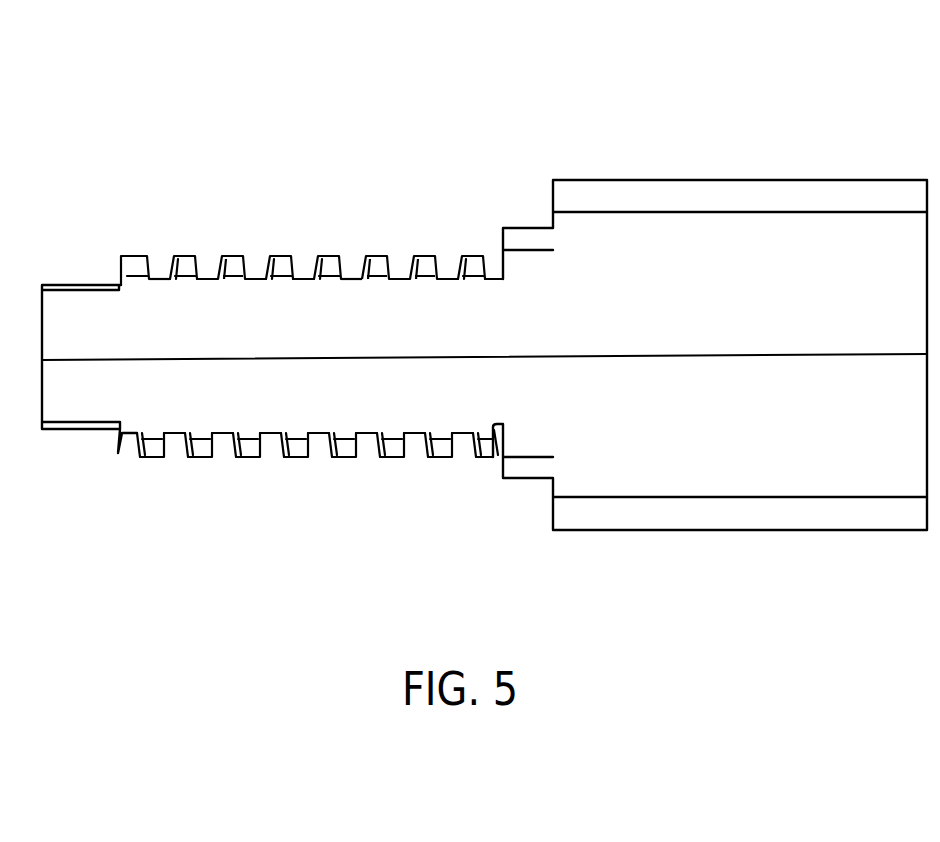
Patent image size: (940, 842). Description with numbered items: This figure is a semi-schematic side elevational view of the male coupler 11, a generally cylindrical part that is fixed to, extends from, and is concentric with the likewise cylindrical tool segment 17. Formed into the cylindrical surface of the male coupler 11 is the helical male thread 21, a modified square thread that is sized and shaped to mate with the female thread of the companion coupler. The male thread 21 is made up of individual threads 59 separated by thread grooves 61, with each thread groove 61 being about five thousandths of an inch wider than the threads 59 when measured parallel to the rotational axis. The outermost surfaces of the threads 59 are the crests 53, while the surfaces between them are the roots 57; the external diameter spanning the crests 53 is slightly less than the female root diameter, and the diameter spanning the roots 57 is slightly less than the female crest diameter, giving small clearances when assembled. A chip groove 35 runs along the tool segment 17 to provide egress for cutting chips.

The male coupler 11 is at (288, 222).
The tool segment 17 is at (703, 140).
The helical male thread 21 is at (375, 263).
The chip groove 35 is at (773, 240).
The crest 53 is at (421, 254).
The root 57 is at (352, 267).
The thread 59 is at (228, 262).
The thread groove 61 is at (161, 252).